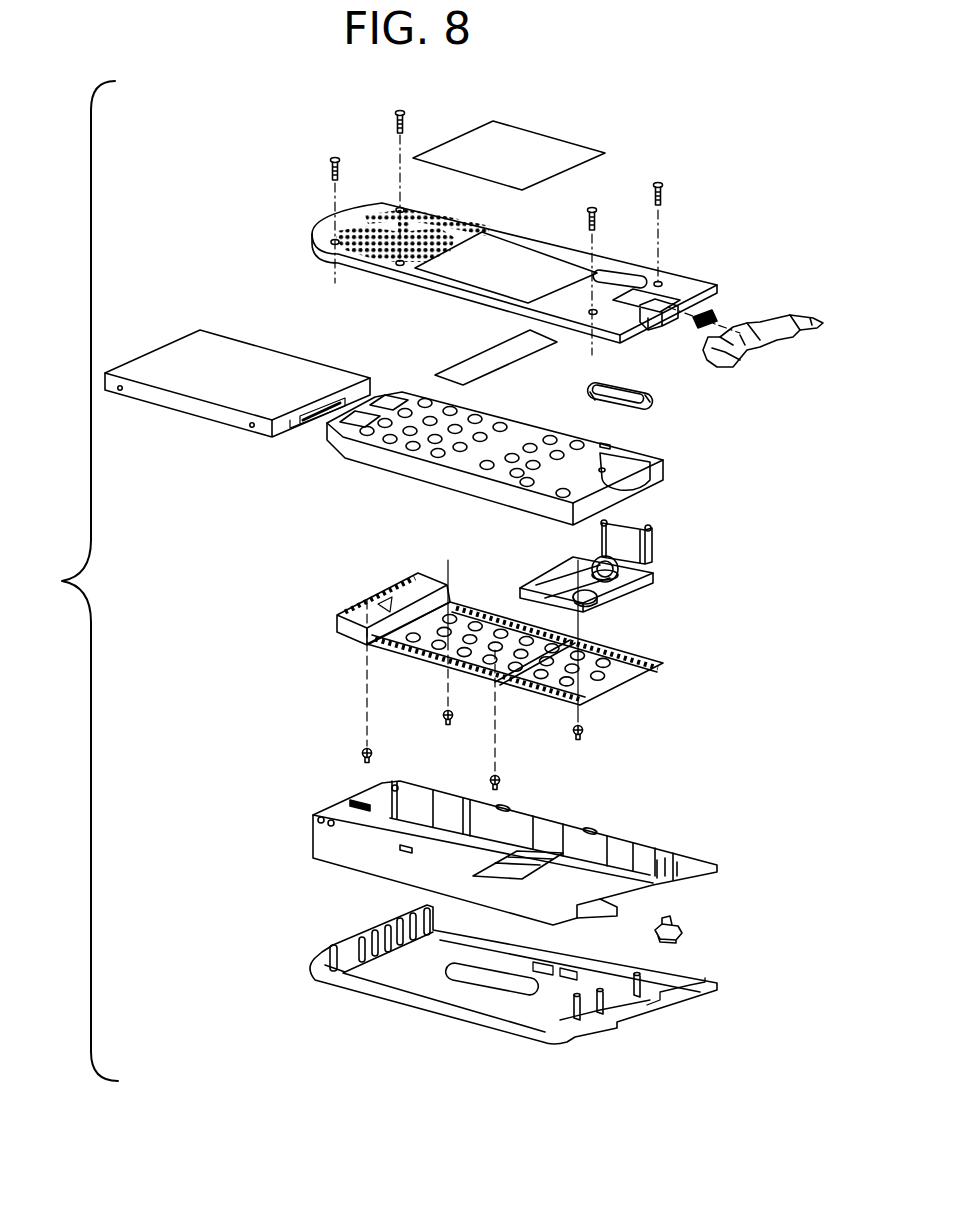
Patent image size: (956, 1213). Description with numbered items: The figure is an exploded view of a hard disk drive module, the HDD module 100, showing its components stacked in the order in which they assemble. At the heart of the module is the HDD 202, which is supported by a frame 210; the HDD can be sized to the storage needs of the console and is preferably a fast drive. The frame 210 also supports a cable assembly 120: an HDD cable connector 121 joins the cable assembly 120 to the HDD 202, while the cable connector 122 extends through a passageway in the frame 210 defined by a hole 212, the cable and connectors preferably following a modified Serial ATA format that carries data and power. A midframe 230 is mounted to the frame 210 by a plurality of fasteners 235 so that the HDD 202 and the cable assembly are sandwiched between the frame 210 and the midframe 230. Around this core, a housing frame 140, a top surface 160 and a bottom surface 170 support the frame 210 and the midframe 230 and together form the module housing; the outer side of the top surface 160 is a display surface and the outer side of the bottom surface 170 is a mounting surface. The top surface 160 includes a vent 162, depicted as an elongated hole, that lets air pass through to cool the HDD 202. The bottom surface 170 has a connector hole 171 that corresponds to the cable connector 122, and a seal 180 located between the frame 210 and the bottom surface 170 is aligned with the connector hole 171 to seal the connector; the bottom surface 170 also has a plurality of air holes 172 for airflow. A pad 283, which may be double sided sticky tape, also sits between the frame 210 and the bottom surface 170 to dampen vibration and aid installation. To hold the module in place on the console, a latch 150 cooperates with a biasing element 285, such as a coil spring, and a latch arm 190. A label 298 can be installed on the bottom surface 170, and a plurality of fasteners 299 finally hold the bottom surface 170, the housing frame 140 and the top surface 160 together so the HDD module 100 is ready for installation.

The HDD module 100 is at (62, 581).
The fasteners 299 is at (334, 170).
The label 298 is at (604, 153).
The bottom surface 170 is at (530, 233).
The air holes 172 is at (428, 212).
The connector hole 171 is at (624, 278).
The biasing element 285 is at (710, 314).
The latch arm 190 is at (798, 333).
The seal 180 is at (653, 397).
The pad 283 is at (497, 338).
The HDD 202 is at (165, 405).
The frame 210 is at (529, 458).
The hole 212 is at (653, 485).
The cable assembly 120 is at (624, 566).
The HDD cable connector 121 is at (556, 575).
The cable connector 122 is at (645, 544).
The midframe 230 is at (647, 678).
The fasteners 235 is at (592, 731).
The housing frame 140 is at (656, 841).
The latch 150 is at (683, 932).
The top surface 160 is at (542, 990).
The vent 162 is at (490, 990).